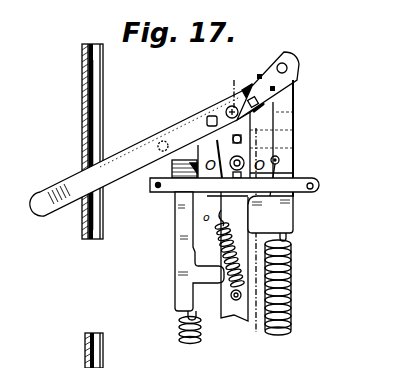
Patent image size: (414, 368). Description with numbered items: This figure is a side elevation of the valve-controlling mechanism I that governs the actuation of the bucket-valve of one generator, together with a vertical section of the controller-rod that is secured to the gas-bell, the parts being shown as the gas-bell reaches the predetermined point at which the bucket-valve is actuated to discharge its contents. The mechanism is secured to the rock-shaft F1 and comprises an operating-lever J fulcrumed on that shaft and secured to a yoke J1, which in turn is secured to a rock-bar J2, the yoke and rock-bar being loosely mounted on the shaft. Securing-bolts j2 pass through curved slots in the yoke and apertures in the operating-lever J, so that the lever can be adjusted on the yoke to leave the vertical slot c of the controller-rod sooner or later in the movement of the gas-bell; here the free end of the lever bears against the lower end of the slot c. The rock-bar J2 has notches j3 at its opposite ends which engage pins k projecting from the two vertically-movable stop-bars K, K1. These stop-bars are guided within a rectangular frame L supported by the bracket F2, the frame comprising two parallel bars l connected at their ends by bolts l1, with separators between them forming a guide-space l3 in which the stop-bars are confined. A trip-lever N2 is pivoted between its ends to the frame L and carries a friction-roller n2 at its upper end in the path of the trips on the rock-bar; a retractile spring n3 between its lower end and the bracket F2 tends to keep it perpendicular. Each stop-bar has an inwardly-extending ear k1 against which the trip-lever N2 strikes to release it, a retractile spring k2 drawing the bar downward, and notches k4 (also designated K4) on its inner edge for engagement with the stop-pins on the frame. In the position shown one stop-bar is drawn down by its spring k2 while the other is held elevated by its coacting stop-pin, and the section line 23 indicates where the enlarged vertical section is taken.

The guide-space l3 is at (82, 141).
The vertical slot c is at (86, 151).
The operating-lever J is at (140, 170).
The yoke J1 is at (250, 82).
The rock-bar J2 is at (290, 82).
The securing-bolts j2 is at (213, 116).
The notches j3 is at (278, 56).
The pins k is at (289, 62).
The section line 23 is at (243, 209).
The rock-shaft F1 is at (294, 110).
The bracket F2 is at (240, 272).
The friction-roller n2 is at (250, 136).
The trip-lever N2 is at (280, 148).
The notches K4 is at (300, 182).
The valve-controlling mechanism I is at (280, 166).
The rectangular frame L is at (335, 171).
The parallel bars l is at (166, 193).
The bolts l1 is at (318, 187).
The stop-bar K is at (175, 232).
The stop-bar K1 is at (294, 217).
The ear k1 is at (202, 284).
The retractile spring k2 is at (239, 293).
The notches k4 is at (193, 245).
The retractile spring n3 is at (208, 266).